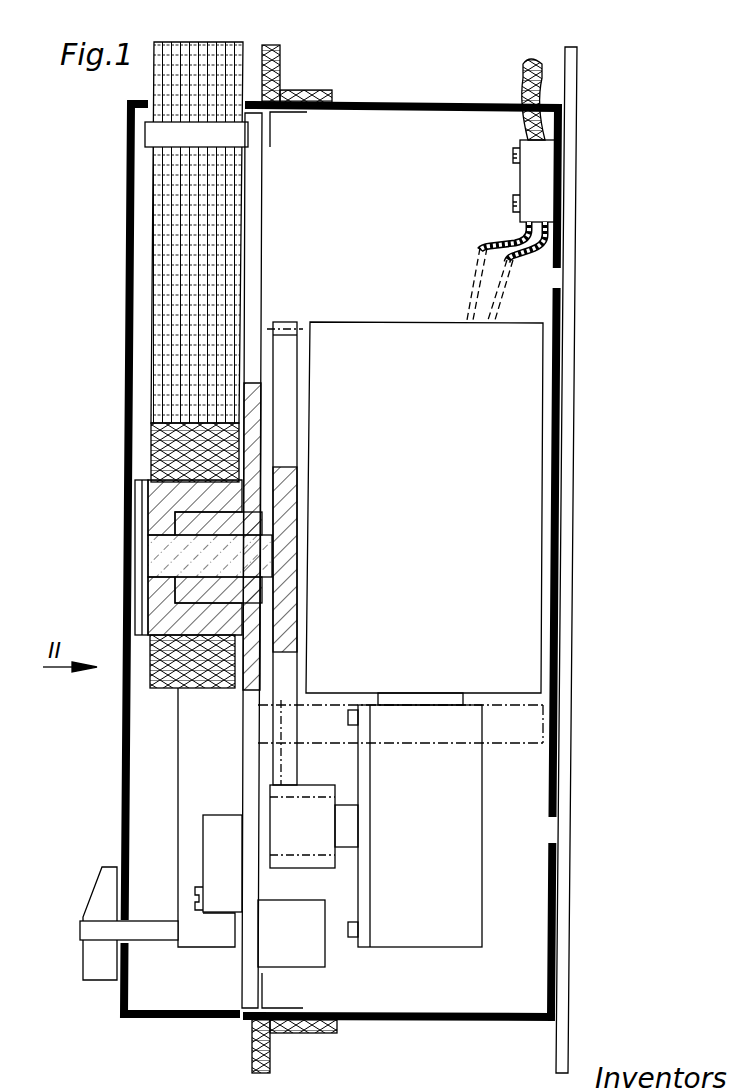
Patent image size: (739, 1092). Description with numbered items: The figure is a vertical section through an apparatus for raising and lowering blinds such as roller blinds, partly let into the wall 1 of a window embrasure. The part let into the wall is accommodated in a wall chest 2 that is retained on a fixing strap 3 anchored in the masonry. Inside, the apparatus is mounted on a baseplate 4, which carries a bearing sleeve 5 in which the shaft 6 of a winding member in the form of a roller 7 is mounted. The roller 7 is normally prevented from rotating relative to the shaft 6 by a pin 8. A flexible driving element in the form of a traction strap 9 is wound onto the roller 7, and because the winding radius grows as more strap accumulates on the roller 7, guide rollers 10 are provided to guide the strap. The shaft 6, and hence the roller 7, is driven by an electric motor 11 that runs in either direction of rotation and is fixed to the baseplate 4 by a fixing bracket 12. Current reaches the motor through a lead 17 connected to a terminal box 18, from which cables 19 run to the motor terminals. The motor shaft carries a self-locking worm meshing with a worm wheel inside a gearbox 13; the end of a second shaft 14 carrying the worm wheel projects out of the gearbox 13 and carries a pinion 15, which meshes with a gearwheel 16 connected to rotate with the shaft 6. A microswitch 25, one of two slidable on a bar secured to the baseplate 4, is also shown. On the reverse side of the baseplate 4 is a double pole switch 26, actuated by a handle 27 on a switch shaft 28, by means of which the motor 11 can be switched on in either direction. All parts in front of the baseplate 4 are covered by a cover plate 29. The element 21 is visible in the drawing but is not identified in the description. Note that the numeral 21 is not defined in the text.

The wall 1 is at (254, 1056).
The wall chest 2 is at (358, 100).
The fixing strap 3 is at (578, 111).
The baseplate 4 is at (263, 213).
The bearing sleeve 5 is at (118, 525).
The shaft 6 is at (118, 563).
The roller 7 is at (150, 474).
The pin 8 is at (118, 490).
The traction strap 9 is at (150, 293).
The guide rollers 10 is at (143, 130).
The electric motor 11 is at (338, 358).
The fixing bracket 12 is at (517, 720).
The gearbox 13 is at (458, 912).
The second shaft 14 is at (348, 840).
The pinion 15 is at (320, 807).
The gearwheel 16 is at (283, 703).
The lead 17 is at (522, 67).
The terminal box 18 is at (533, 178).
The cables 19 is at (500, 275).
The plunger 21 is at (200, 746).
The microswitch 25 is at (218, 830).
The double pole switch 26 is at (308, 930).
The handle 27 is at (93, 972).
The switch shaft 28 is at (80, 930).
The cover plate 29 is at (92, 360).